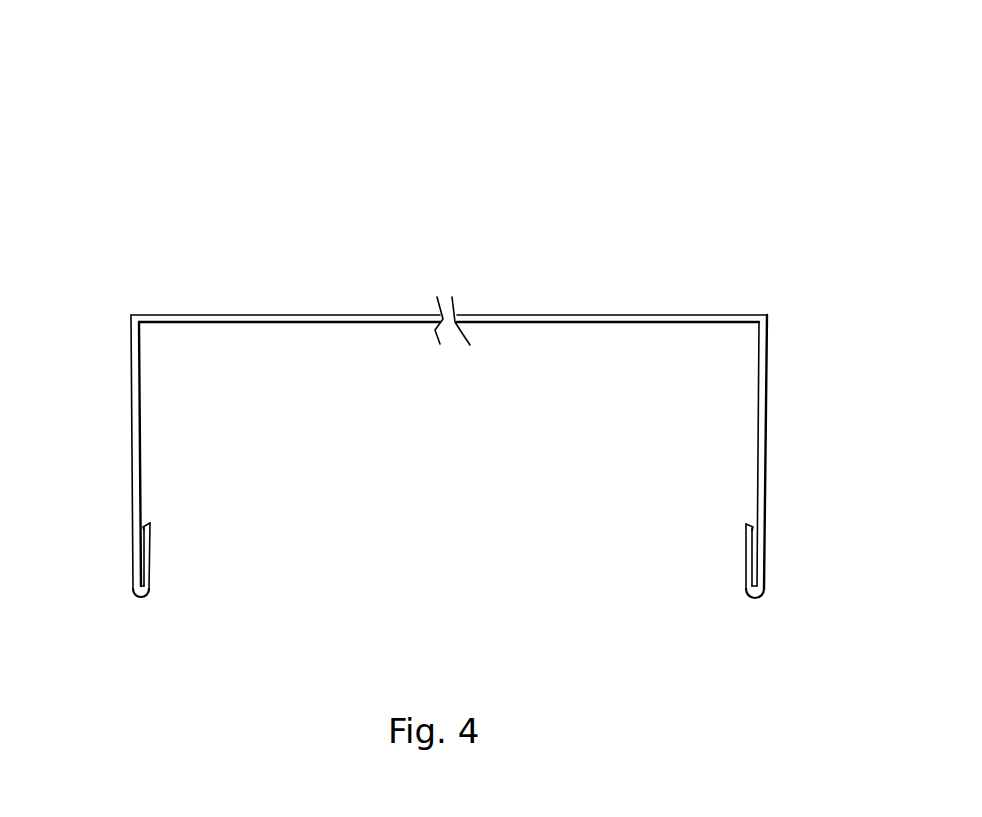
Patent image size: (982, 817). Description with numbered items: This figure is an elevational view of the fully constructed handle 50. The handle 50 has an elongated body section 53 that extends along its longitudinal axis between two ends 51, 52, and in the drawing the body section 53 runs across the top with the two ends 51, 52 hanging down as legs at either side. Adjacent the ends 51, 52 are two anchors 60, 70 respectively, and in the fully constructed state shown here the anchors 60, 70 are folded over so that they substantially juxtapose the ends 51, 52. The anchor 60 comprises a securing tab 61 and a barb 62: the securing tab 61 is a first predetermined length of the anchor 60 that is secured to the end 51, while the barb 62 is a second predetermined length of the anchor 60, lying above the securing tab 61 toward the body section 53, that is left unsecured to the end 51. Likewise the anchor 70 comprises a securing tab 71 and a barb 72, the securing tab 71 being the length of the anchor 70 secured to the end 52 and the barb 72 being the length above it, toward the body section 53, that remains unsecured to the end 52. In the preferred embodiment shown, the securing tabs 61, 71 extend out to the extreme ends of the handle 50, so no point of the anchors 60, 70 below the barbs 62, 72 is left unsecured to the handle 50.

The handle 50 is at (485, 287).
The end 51 is at (135, 545).
The end 52 is at (763, 543).
The elongated body section 53 is at (273, 320).
The anchor 60 is at (150, 540).
The securing tab 61 is at (150, 560).
The barb 62 is at (151, 522).
The anchor 70 is at (746, 545).
The securing tab 71 is at (748, 563).
The barb 72 is at (746, 526).